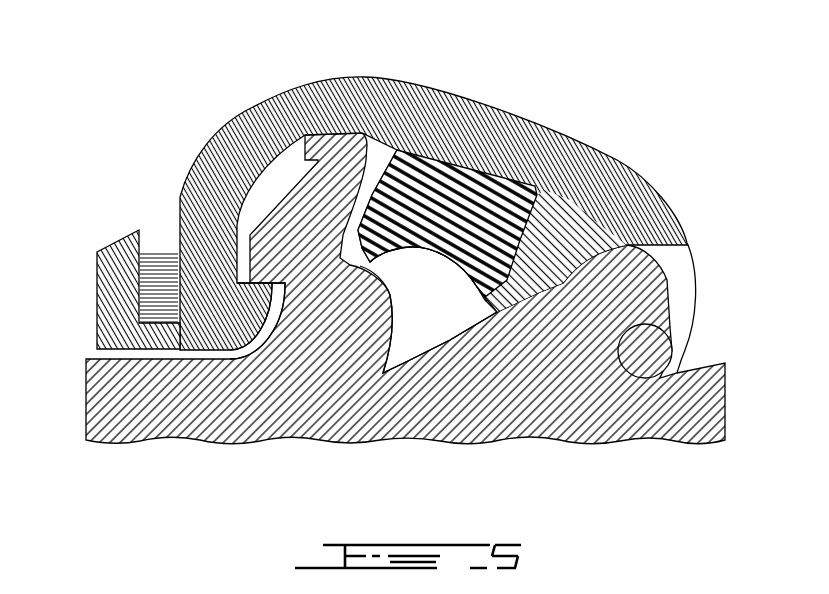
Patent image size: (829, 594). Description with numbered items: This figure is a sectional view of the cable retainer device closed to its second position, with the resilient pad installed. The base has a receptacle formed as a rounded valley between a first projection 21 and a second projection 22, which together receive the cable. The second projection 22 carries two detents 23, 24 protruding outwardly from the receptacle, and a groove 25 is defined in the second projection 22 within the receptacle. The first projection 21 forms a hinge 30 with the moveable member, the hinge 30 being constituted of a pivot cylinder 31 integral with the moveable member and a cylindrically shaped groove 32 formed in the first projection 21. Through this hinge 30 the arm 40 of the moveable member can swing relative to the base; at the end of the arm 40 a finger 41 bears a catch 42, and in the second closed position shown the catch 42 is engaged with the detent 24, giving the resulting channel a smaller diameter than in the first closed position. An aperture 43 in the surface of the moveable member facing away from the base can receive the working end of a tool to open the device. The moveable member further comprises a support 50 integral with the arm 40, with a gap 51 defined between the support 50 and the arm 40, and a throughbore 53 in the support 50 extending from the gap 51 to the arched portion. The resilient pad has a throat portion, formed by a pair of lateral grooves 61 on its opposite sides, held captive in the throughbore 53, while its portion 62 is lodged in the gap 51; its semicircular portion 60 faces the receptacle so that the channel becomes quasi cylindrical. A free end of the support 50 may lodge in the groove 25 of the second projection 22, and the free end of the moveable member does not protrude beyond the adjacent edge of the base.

The first projection 21 is at (610, 303).
The second projection 22 is at (345, 368).
The detent 23 is at (265, 142).
The detent 24 is at (252, 245).
The groove 25 is at (383, 347).
The hinge 30 is at (678, 357).
The pivot cylinder 31 is at (647, 380).
The cylindrically shaped groove 32 is at (675, 347).
The arm 40 is at (487, 137).
The finger 41 is at (117, 297).
The catch 42 is at (243, 307).
The aperture 43 is at (158, 268).
The support 50 is at (360, 263).
The gap 51 is at (533, 200).
The throughbore 53 is at (442, 172).
The semicircular portion 60 is at (437, 252).
The lateral grooves 61 is at (377, 150).
The portion 62 is at (412, 188).